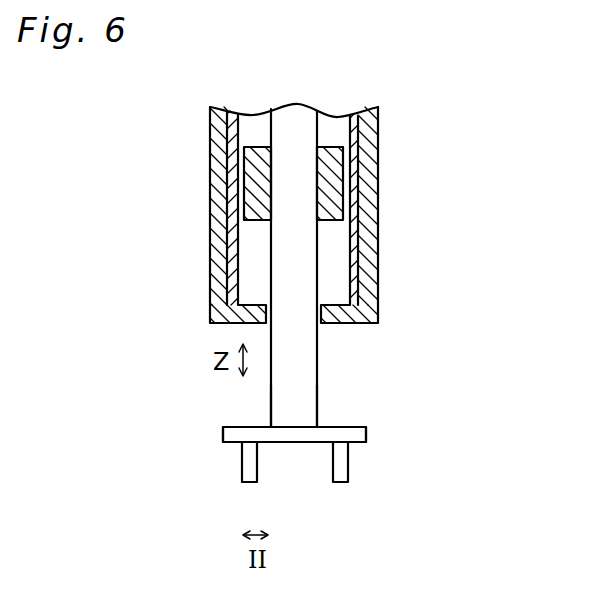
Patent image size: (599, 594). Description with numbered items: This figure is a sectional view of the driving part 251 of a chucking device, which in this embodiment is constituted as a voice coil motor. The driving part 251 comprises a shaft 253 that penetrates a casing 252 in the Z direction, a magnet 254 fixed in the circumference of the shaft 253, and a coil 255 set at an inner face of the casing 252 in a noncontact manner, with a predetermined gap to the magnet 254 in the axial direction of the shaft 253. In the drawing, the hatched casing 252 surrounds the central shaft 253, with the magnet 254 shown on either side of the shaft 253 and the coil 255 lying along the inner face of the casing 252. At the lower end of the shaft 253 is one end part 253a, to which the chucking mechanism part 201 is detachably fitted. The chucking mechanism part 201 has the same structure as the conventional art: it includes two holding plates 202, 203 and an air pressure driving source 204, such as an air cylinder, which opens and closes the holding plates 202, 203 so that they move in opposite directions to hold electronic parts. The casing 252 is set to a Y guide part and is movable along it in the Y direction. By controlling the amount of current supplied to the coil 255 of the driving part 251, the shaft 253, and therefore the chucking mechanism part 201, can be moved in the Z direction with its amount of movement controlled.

The chucking mechanism part 201 is at (409, 440).
The holding plate 202 is at (242, 465).
The holding plate 203 is at (349, 474).
The air pressure driving source 204 is at (223, 434).
The driving part 251 is at (383, 192).
The casing 252 is at (379, 243).
The shaft 253 is at (318, 343).
The end part of the shaft 253a is at (297, 418).
The magnet 254 is at (345, 167).
The coil 255 is at (358, 130).